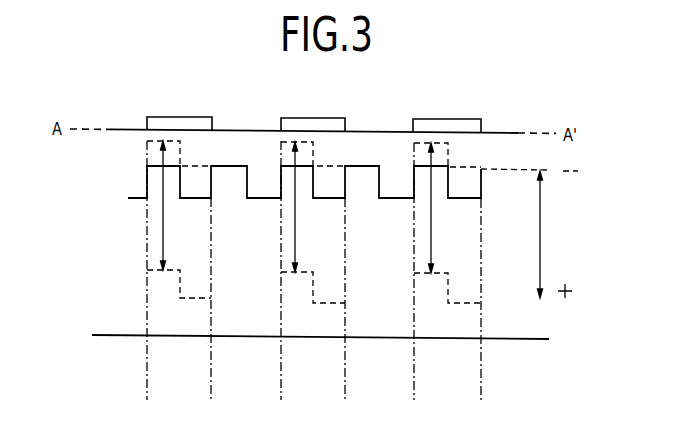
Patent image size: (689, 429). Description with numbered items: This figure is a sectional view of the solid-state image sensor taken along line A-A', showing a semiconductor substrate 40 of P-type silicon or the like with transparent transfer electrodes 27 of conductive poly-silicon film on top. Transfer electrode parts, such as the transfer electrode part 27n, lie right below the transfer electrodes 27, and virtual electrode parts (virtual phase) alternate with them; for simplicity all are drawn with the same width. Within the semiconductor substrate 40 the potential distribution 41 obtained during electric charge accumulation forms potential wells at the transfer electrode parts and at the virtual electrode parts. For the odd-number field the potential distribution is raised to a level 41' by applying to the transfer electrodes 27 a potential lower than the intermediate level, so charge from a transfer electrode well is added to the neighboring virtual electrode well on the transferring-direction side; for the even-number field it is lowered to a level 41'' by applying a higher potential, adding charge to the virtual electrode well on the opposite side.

The transfer electrodes 27 is at (179, 117).
The semiconductor substrate 40 is at (123, 235).
The potential distribution 41 is at (330, 183).
The raised potential distribution level 41' is at (282, 154).
The lowered potential distribution level 41'' is at (281, 290).
The transfer electrode part 27n is at (178, 322).